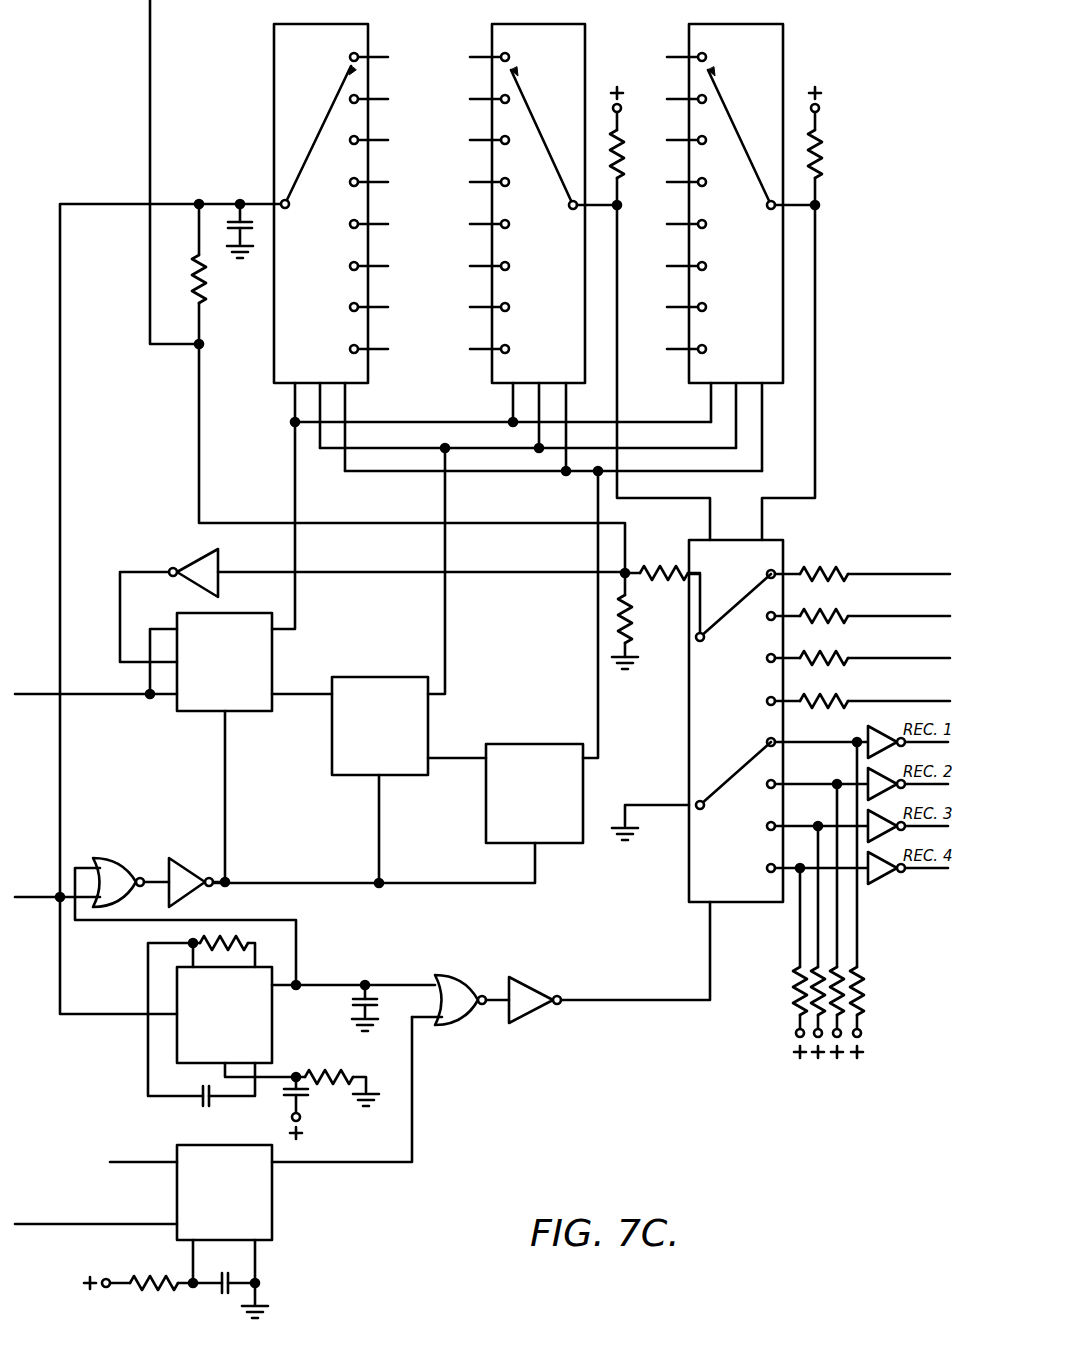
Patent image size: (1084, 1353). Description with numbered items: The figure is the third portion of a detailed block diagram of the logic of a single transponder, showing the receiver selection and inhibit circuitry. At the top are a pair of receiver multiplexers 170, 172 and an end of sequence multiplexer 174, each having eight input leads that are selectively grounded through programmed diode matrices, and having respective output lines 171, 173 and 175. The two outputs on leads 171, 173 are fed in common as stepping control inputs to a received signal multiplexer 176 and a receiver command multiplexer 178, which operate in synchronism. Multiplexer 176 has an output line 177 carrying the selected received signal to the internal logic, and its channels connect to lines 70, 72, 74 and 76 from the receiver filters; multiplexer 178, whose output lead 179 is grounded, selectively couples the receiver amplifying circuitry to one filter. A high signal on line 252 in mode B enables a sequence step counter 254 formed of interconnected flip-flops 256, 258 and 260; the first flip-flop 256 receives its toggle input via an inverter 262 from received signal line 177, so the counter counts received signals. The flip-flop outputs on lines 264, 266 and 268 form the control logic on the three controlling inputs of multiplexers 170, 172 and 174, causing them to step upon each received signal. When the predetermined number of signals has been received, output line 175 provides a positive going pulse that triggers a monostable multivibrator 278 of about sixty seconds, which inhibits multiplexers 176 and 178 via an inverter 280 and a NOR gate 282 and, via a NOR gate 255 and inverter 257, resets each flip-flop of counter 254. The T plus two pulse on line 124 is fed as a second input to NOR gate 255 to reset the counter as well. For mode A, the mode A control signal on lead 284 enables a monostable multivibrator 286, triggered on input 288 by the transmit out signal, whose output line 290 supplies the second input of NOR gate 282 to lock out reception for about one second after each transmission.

The line 70 is at (858, 570).
The line 72 is at (858, 612).
The line 74 is at (858, 654).
The line 76 is at (858, 697).
The T+2 pulse line 124 is at (35, 900).
The receiver multiplexer 170 is at (520, 24).
The output line 171 is at (597, 215).
The receiver multiplexer 172 is at (740, 24).
The output line 173 is at (795, 215).
The end of sequence multiplexer 174 is at (300, 24).
The output line 175 is at (260, 204).
The received signal multiplexer 176 is at (768, 540).
The output line 177 is at (150, 17).
The receiver command multiplexer 178 is at (688, 721).
The output lead 179 is at (692, 798).
The line 252 is at (70, 694).
The sequence step counter 254 is at (402, 640).
The NOR gate 255 is at (100, 858).
The flip-flop 256 is at (205, 714).
The inverter 257 is at (168, 862).
The flip-flop 258 is at (358, 778).
The flip-flop 260 is at (512, 846).
The inverter 262 is at (196, 562).
The line 264 is at (294, 498).
The line 266 is at (444, 500).
The line 268 is at (597, 491).
The monostable multivibrator 278 is at (272, 1035).
The inverter 280 is at (534, 986).
The NOR gate 282 is at (444, 978).
The lead 284 is at (40, 1224).
The monostable multivibrator 286 is at (256, 1148).
The input 288 is at (154, 1160).
The output line 290 is at (338, 1168).